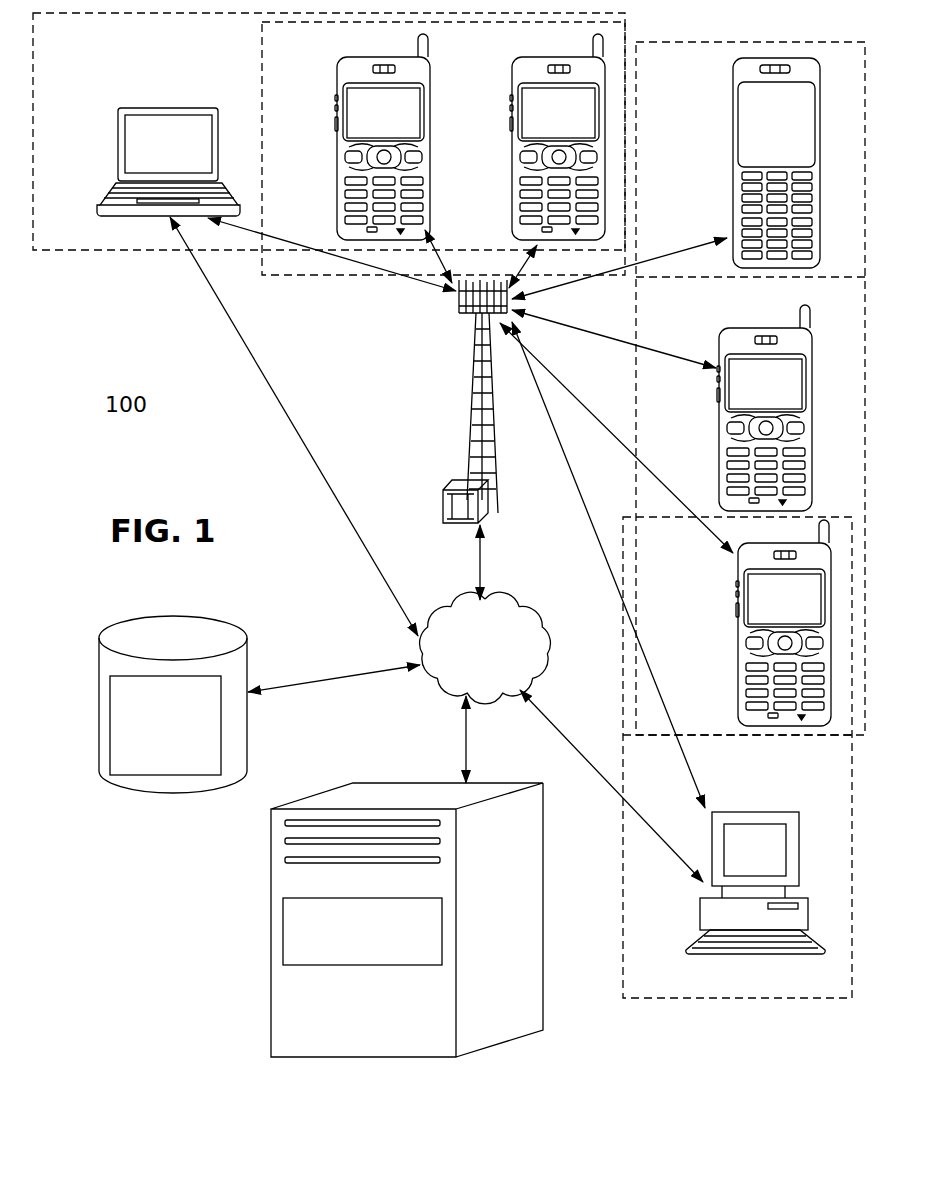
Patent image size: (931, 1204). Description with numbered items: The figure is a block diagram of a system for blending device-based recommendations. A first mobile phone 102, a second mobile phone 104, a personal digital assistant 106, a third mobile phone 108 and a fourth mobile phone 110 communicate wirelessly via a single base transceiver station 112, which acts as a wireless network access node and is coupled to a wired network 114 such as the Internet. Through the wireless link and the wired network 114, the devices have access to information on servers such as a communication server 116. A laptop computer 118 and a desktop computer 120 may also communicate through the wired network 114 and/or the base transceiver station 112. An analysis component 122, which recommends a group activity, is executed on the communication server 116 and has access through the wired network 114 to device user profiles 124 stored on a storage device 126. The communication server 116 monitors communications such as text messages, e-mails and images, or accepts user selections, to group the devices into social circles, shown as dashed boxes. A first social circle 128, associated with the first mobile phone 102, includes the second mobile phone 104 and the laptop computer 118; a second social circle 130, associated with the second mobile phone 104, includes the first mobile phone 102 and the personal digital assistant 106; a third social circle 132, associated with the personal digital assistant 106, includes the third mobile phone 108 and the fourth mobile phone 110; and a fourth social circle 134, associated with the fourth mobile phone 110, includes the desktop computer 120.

The first mobile phone 102 is at (340, 196).
The second mobile phone 104 is at (514, 196).
The personal digital assistant 106 is at (733, 212).
The third mobile phone 108 is at (720, 420).
The fourth mobile phone 110 is at (739, 673).
The base transceiver station 112 is at (470, 415).
The wired network 114 is at (448, 603).
The communication server 116 is at (370, 920).
The laptop computer 118 is at (114, 189).
The desktop computer 120 is at (700, 903).
The analysis component 122 is at (290, 935).
The device user profiles 124 is at (112, 749).
The storage device 126 is at (143, 699).
The first social circle 128 is at (92, 250).
The second social circle 130 is at (262, 275).
The third social circle 132 is at (636, 497).
The fourth social circle 134 is at (623, 912).